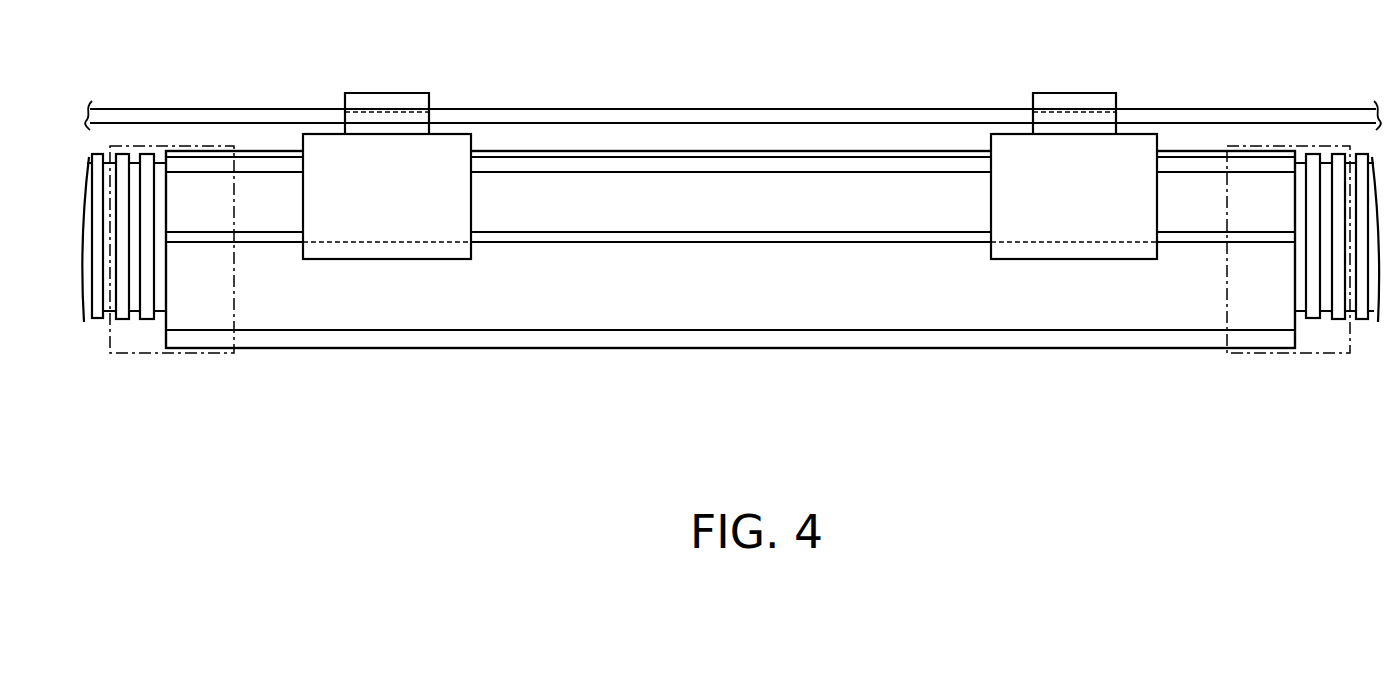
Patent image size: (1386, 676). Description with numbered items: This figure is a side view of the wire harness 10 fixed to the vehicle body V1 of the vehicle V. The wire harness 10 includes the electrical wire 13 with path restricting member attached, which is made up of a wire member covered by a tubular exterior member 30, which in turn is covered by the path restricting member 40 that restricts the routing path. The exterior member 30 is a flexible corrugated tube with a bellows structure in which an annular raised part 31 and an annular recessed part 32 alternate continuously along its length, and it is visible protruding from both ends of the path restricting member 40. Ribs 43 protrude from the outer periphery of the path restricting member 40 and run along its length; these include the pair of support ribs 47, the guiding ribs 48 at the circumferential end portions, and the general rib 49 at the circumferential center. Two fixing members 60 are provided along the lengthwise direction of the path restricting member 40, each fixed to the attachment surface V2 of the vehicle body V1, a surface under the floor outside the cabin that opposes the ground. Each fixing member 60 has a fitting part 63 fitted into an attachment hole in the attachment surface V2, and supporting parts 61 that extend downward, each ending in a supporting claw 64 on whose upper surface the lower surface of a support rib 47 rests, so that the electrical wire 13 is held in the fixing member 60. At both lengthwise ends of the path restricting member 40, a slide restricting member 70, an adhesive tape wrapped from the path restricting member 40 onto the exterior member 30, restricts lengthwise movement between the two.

The wire harness 10 is at (728, 240).
The electrical wire with path restricting member attached 13 is at (943, 362).
The exterior member 30 is at (120, 234).
The annular raised part 31 is at (148, 322).
The annular recessed part 32 is at (132, 320).
The path restricting member 40 is at (687, 323).
The ribs 43 is at (672, 150).
The support ribs 47 is at (790, 237).
The guiding ribs 48 is at (795, 150).
The general rib 49 is at (773, 352).
The fixing member 60 is at (730, 176).
The supporting parts 61 is at (471, 203).
The fitting part 63 is at (388, 93).
The supporting claw 64 is at (342, 242).
The slide restricting member 70 is at (157, 355).
The vehicle V is at (733, 86).
The vehicle body V1 is at (733, 108).
The attachment surface V2 is at (853, 130).